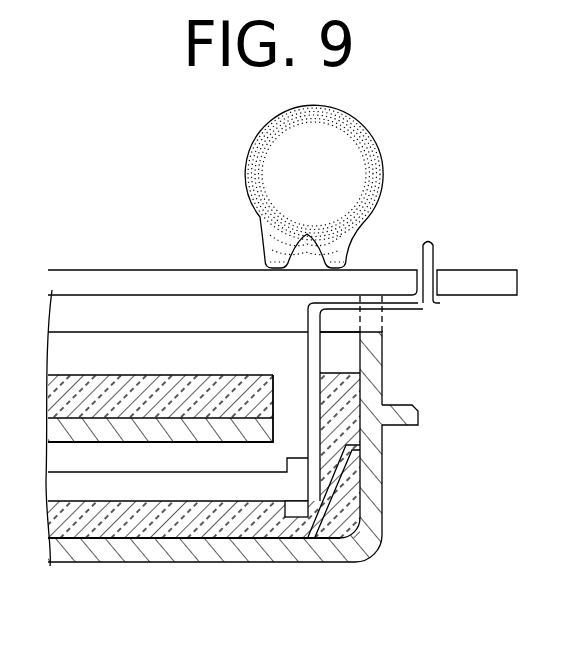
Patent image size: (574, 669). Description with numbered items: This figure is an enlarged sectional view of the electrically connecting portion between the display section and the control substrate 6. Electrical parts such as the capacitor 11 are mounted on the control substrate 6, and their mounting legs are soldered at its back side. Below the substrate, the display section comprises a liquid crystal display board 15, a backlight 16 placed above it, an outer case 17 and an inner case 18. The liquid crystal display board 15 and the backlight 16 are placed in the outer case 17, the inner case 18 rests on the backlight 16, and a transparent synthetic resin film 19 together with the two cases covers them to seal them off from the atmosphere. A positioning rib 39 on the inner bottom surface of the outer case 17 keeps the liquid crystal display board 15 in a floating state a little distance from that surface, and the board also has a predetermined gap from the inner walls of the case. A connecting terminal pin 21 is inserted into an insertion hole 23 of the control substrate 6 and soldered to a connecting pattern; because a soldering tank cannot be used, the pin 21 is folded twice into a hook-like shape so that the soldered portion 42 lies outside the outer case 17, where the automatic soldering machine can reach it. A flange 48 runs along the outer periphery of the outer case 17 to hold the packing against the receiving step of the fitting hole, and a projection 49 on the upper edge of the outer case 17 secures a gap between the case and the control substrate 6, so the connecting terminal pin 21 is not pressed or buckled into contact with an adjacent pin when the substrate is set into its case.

The control substrate 6 is at (110, 274).
The capacitor 11 is at (366, 162).
The connecting terminal pin 21 is at (428, 240).
The insertion hole 23 is at (440, 270).
The soldered portion 42 is at (393, 296).
The projection 49 is at (382, 318).
The flange 48 is at (418, 410).
The positioning rib 39 is at (340, 525).
The outer case 17 is at (163, 563).
The transparent synthetic resin film 19 is at (72, 392).
The inner case 18 is at (177, 423).
The backlight 16 is at (253, 462).
The liquid crystal display board 15 is at (75, 497).